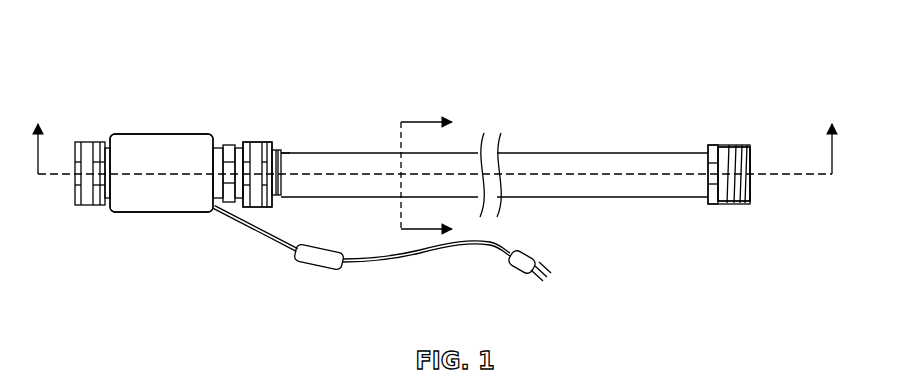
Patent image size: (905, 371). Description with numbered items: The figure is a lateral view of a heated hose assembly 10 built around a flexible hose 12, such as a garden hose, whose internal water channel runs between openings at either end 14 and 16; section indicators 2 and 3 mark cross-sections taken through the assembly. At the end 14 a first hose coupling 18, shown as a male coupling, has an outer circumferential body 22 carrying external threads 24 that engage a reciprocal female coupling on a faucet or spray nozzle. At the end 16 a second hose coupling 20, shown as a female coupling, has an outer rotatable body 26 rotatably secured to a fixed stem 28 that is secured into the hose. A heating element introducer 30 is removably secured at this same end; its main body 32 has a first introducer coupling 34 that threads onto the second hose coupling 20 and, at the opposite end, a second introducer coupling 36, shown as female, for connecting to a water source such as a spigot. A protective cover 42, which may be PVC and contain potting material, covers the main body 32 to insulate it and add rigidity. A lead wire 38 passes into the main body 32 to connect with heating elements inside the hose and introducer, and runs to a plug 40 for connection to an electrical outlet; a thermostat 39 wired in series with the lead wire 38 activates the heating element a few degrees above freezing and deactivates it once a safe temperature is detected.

The heated hose assembly 10 is at (101, 70).
The section line 2 is at (435, 135).
The section line 3 is at (435, 176).
The flexible hose 12 is at (538, 152).
The end 14 is at (752, 174).
The end 16 is at (257, 142).
The first hose coupling 18 is at (728, 147).
The second hose coupling 20 is at (274, 150).
The outer circumferential body 22 is at (730, 203).
The external threads 24 is at (735, 147).
The outer rotatable body 26 is at (279, 151).
The fixed stem 28 is at (282, 153).
The heating element introducer 30 is at (142, 148).
The main body 32 is at (218, 148).
The first introducer coupling 34 is at (234, 143).
The second introducer coupling 36 is at (88, 205).
The lead wire 38 is at (246, 229).
The thermostat 39 is at (320, 272).
The plug 40 is at (536, 259).
The protective cover 42 is at (152, 212).